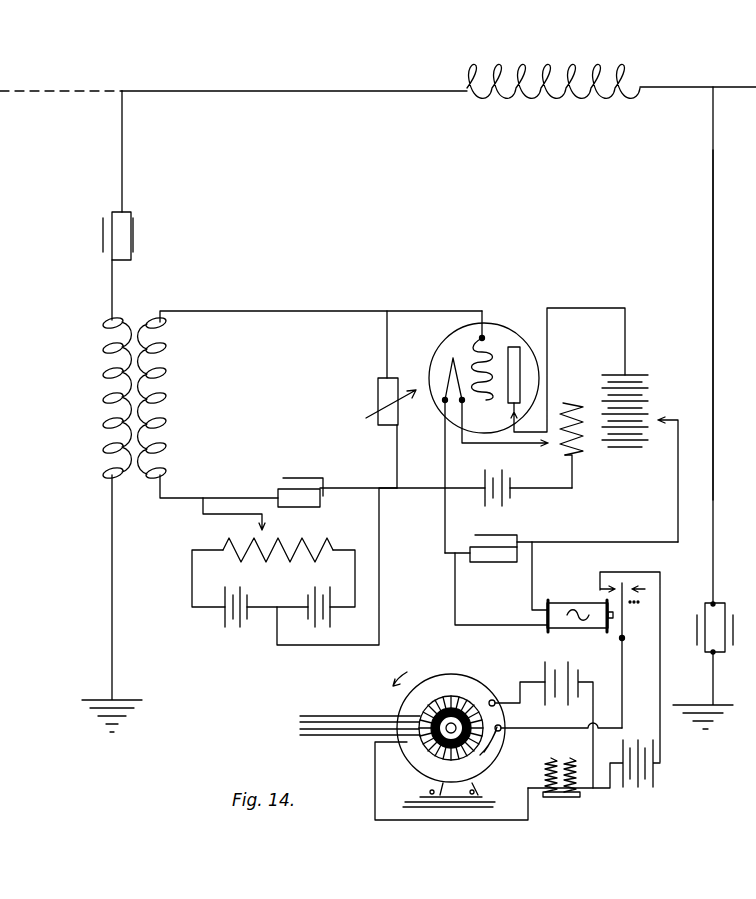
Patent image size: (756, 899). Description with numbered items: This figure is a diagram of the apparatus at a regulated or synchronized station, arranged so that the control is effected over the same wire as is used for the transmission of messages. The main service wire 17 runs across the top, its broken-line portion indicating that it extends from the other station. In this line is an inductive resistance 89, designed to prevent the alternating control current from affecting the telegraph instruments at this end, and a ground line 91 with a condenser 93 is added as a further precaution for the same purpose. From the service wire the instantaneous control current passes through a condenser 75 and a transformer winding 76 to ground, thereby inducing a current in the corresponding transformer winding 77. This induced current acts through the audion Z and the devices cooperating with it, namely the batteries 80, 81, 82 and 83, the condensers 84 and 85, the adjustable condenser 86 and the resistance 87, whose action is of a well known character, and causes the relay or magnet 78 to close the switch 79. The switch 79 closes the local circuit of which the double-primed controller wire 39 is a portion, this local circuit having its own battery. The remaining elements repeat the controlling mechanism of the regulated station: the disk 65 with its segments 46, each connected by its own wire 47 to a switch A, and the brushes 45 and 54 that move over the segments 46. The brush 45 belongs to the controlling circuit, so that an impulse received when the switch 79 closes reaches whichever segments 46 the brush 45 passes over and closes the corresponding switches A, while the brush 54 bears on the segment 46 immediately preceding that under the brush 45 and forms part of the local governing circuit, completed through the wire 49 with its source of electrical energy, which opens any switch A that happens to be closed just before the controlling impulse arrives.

The main service wire 17 is at (725, 86).
The inductive resistance 89 is at (553, 96).
The ground line 91 is at (713, 228).
The condenser 75 is at (133, 235).
The transformer winding 76 is at (110, 395).
The transformer winding 77 is at (168, 398).
The adjustable condenser 86 is at (376, 400).
The audion Z is at (527, 430).
The resistance 87 is at (563, 445).
The battery 80 is at (640, 445).
The battery 81 is at (482, 485).
The condenser 85 is at (292, 480).
The battery 83 is at (222, 617).
The battery 82 is at (332, 617).
The condenser 84 is at (561, 580).
The relay or magnet 78 is at (580, 604).
The switch 79 is at (612, 618).
The condenser 93 is at (727, 632).
The segments 46 is at (462, 698).
The wires 47 is at (328, 733).
The brush 54 is at (498, 707).
The brush 45 is at (503, 733).
The disk 65 is at (462, 760).
The wire 49 is at (551, 719).
The controller wire 39 is at (660, 716).
The switch A is at (561, 787).